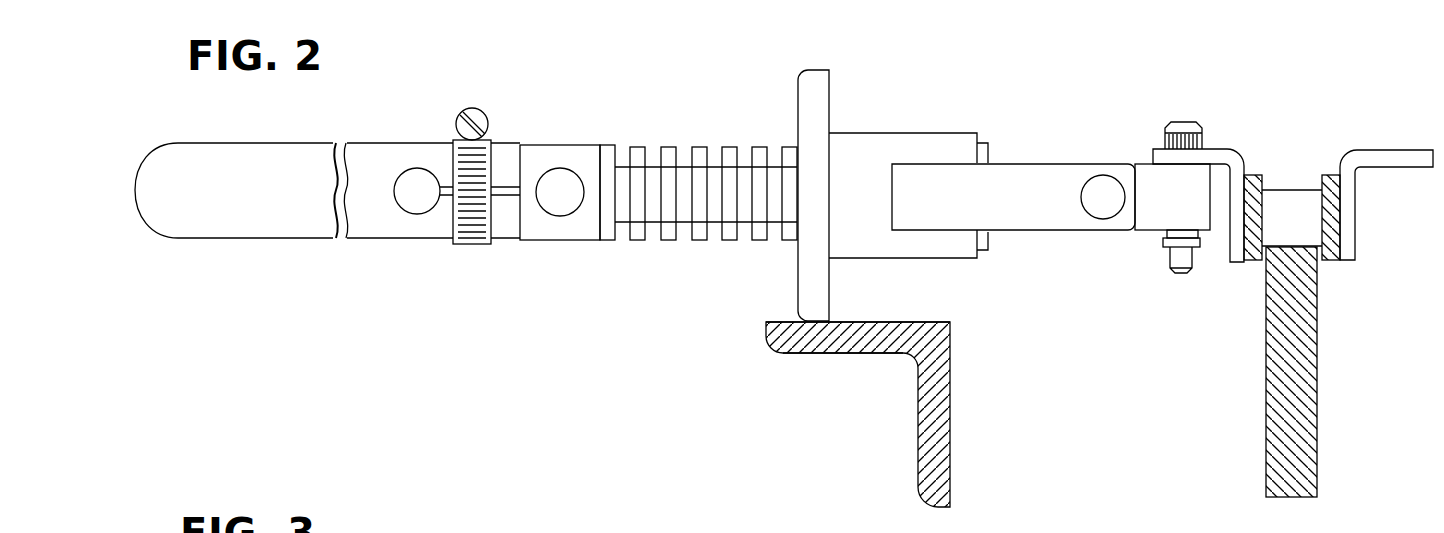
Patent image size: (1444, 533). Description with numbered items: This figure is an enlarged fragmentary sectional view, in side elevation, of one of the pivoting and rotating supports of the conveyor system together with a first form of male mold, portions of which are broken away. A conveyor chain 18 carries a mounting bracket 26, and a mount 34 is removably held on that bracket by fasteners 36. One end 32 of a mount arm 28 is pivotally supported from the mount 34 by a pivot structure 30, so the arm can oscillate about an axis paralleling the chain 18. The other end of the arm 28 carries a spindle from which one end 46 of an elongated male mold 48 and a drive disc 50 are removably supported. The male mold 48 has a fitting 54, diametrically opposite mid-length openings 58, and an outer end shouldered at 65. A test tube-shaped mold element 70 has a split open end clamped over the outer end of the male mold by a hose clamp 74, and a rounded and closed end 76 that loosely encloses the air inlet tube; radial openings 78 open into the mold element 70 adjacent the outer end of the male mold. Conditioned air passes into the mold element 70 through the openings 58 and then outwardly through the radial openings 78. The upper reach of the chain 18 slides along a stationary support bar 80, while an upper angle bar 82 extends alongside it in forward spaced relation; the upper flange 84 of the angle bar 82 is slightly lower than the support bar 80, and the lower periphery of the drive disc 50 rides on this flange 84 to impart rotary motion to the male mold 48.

The conveyor chain 18 is at (1290, 192).
The mounting bracket 26 is at (1227, 157).
The mount arm 28 is at (920, 175).
The pivot structure 30 is at (1097, 183).
The one end of the mount arm 32 is at (1070, 218).
The mount 34 is at (1205, 213).
The fasteners 36 is at (1182, 120).
The one end of the male mold 46 is at (699, 147).
The male mold 48 is at (607, 147).
The drive disc 50 is at (812, 78).
The fitting 54 is at (553, 150).
The mid-length openings 58 is at (548, 216).
The shoulder 65 is at (512, 144).
The test tube-shaped mold element 70 is at (193, 238).
The hose clamp 74 is at (470, 248).
The rounded and closed end 76 is at (140, 205).
The radial openings 78 is at (405, 208).
The support bar 80 is at (1273, 461).
The upper angle bar 82 is at (925, 440).
The upper flange 84 is at (803, 355).